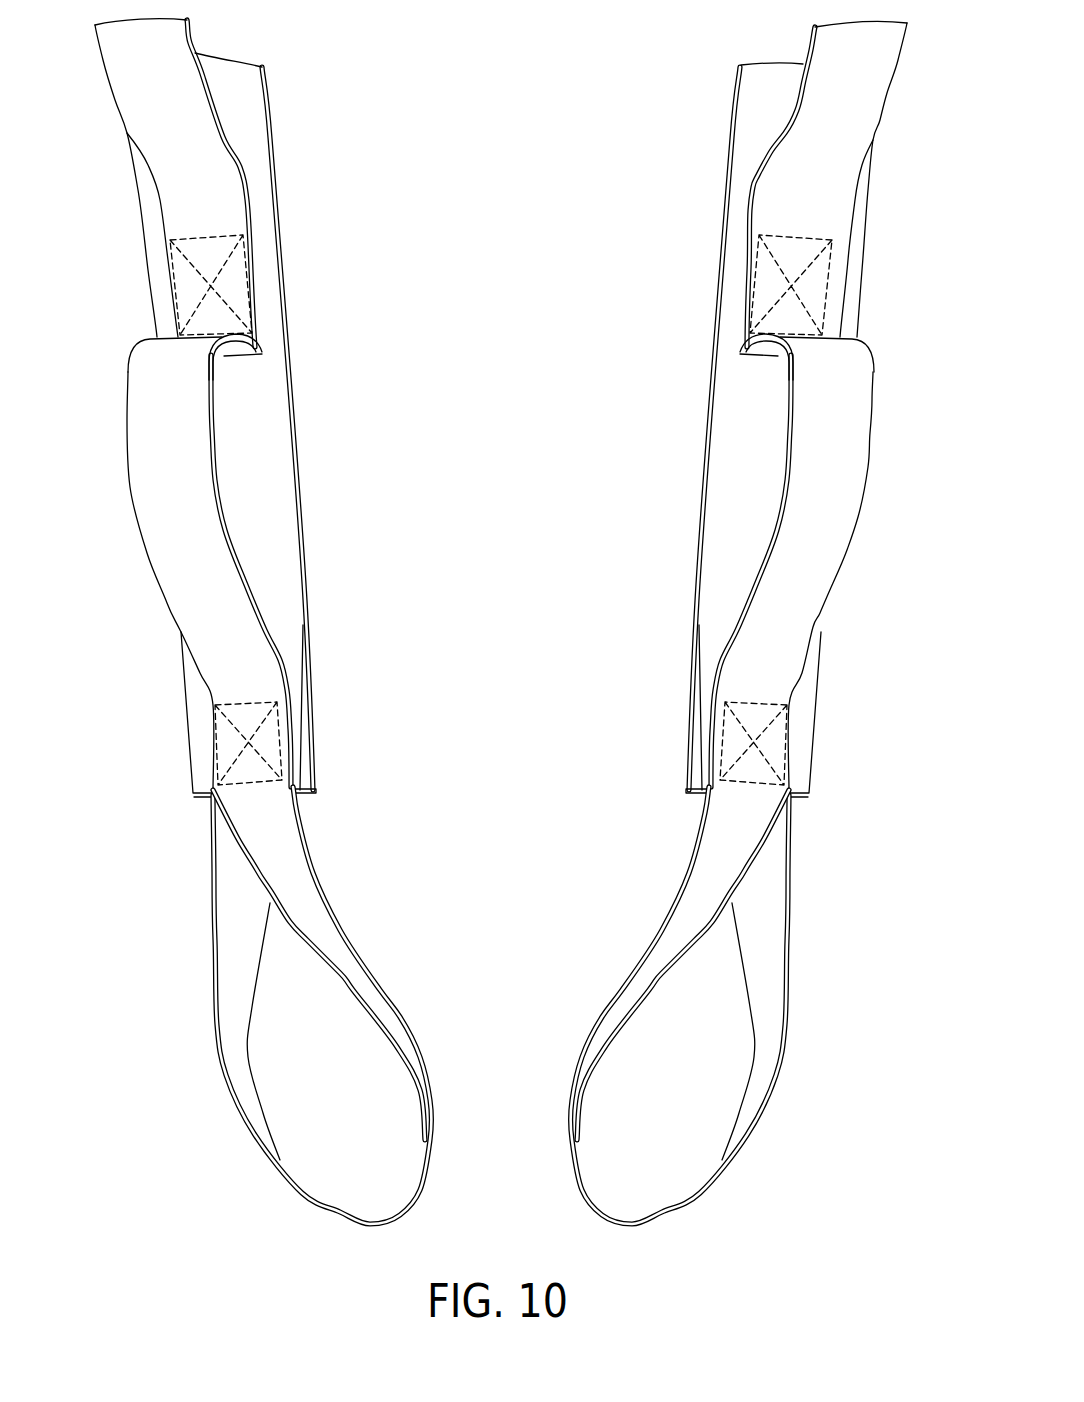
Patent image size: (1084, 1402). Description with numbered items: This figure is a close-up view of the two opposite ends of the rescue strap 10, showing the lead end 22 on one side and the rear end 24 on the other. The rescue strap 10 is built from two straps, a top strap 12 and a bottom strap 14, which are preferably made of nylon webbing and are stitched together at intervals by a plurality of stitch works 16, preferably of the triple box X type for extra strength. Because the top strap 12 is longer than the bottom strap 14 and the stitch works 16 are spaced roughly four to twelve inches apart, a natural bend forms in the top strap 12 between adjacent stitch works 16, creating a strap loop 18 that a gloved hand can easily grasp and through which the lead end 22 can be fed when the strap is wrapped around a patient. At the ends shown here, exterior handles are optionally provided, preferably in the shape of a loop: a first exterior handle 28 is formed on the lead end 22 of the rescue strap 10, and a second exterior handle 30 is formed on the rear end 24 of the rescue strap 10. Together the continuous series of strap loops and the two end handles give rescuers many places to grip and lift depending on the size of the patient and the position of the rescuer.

The rescue strap 10 is at (323, 228).
The top strap 12 is at (173, 511).
The bottom strap 14 is at (253, 449).
The stitch works 16 is at (200, 284).
The strap loop 18 is at (750, 449).
The lead end 22 is at (340, 737).
The rear end 24 is at (667, 735).
The first exterior handle 28 is at (243, 982).
The second exterior handle 30 is at (760, 980).